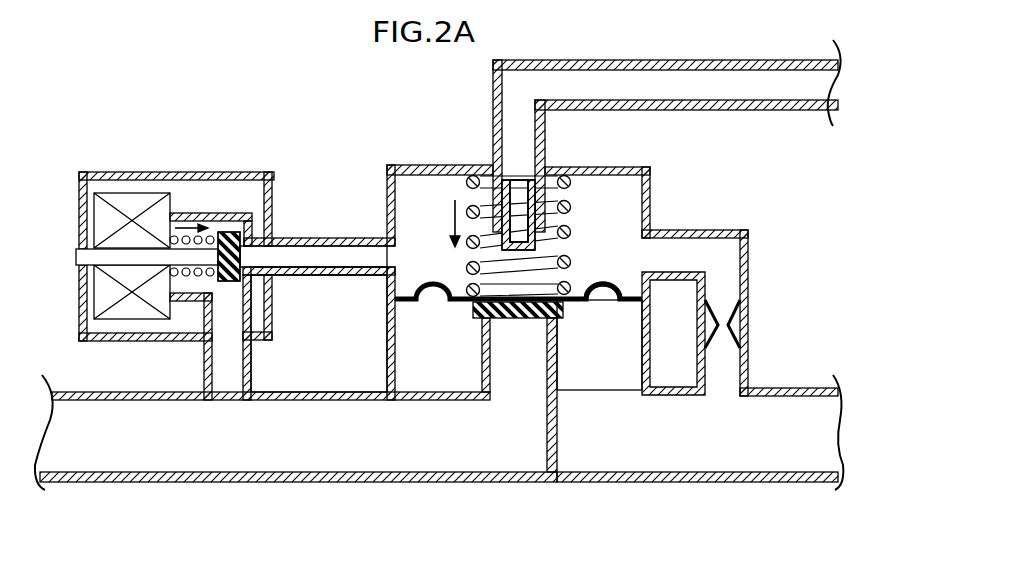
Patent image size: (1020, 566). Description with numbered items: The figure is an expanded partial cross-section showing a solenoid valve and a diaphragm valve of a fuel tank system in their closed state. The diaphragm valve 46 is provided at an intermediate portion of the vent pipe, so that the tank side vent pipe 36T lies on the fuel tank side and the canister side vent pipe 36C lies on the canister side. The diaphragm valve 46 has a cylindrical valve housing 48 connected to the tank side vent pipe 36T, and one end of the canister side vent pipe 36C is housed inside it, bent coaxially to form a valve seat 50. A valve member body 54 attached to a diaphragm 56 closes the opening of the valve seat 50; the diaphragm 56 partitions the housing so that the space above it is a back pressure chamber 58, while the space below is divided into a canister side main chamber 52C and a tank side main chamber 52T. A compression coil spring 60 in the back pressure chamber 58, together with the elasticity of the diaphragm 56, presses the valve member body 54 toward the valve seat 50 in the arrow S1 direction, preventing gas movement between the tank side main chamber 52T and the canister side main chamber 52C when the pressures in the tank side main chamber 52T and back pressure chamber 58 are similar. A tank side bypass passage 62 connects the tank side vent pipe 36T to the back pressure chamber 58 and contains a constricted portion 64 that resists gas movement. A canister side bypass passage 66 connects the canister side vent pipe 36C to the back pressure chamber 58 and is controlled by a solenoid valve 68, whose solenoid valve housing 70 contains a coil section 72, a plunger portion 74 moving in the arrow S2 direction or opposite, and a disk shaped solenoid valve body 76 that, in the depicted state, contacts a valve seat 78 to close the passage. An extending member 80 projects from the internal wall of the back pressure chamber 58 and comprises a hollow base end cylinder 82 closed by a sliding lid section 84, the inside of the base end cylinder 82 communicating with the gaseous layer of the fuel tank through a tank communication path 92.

The diaphragm valve 46 is at (430, 150).
The valve housing 48 is at (388, 350).
The valve seat 50 is at (480, 320).
The canister side main chamber 52C is at (546, 376).
The tank side main chamber 52T is at (628, 374).
The valve member body 54 is at (470, 308).
The diaphragm 56 is at (600, 282).
The back pressure chamber 58 is at (438, 208).
The compression coil spring 60 is at (468, 268).
The tank side bypass passage 62 is at (707, 232).
The constricted portion 64 is at (727, 312).
The canister side bypass passage 66 is at (330, 277).
The solenoid valve 68 is at (137, 165).
The solenoid valve housing 70 is at (80, 197).
The coil section 72 is at (92, 223).
The plunger portion 74 is at (76, 256).
The solenoid valve body 76 is at (233, 231).
The valve seat 78 is at (243, 258).
The extending member 80 is at (699, 124).
The base end cylinder 82 is at (545, 205).
The sliding lid section 84 is at (540, 240).
The tank communication path 92 is at (704, 58).
The canister side vent pipe 36C is at (342, 478).
The tank side vent pipe 36T is at (762, 480).
The arrow S1 direction S1 is at (450, 232).
The arrow S2 direction S2 is at (190, 214).